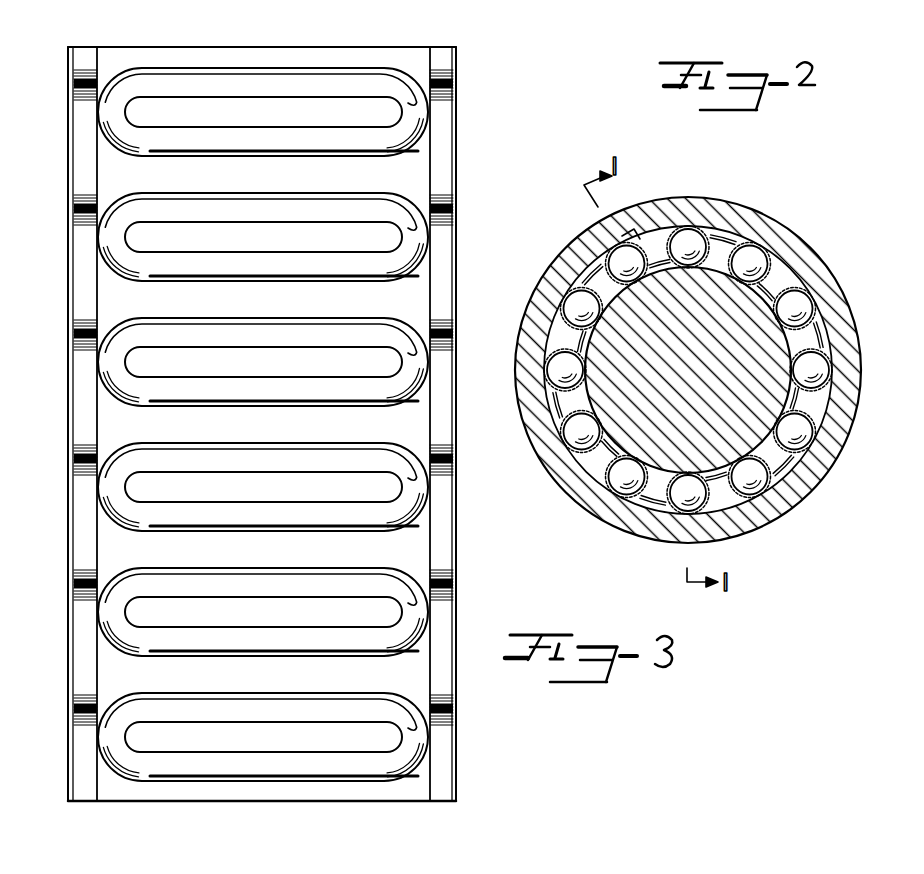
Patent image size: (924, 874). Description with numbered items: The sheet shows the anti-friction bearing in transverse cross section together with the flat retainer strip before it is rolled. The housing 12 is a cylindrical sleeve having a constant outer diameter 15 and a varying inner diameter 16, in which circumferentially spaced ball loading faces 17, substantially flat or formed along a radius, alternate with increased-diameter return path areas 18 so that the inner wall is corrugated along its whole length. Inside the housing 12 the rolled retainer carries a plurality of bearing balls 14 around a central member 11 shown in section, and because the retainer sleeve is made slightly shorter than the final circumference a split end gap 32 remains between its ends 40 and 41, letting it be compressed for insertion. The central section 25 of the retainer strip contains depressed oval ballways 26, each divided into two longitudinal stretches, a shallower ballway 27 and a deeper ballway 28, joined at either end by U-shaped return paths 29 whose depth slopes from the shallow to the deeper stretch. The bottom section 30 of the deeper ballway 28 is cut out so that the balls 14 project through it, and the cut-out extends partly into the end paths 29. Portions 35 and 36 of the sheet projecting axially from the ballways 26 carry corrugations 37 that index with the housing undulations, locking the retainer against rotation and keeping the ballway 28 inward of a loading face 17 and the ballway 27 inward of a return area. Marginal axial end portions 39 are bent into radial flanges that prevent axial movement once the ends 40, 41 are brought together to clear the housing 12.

In FIG. 2, the inner ring / shaft 11 is at (763, 398).
In FIG. 2, the housing 12 is at (720, 207).
In FIG. 2, the bearing balls 14 is at (800, 466).
In FIG. 2, the outer diameter 15 is at (785, 222).
In FIG. 2, the inner diameter 16 is at (800, 284).
In FIG. 2, the ball loading faces 17 is at (625, 238).
In FIG. 2, the return path areas 18 is at (572, 266).
In FIG. 2, the split end gap 32 is at (783, 268).
In FIG. 3, the central section 25 is at (181, 58).
In FIG. 3, the oval ballways 26 is at (420, 108).
In FIG. 3, the ballway 27 is at (253, 138).
In FIG. 3, the ballway 28 is at (272, 75).
In FIG. 3, the U-shaped paths 29 is at (108, 123).
In FIG. 3, the bottom section 30 is at (313, 80).
In FIG. 3, the portion of retainer sheet 35 is at (88, 775).
In FIG. 3, the portion of retainer sheet 36 is at (442, 777).
In FIG. 3, the corrugations 37 is at (73, 573).
In FIG. 3, the marginal axial end portions 39 is at (72, 247).
In FIG. 3, the end of retainer 40 is at (296, 789).
In FIG. 3, the end of retainer 41 is at (232, 48).